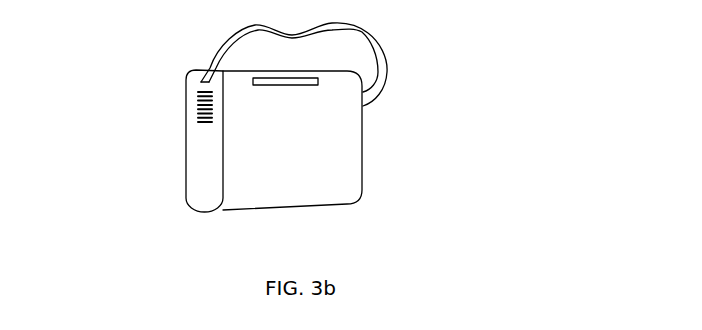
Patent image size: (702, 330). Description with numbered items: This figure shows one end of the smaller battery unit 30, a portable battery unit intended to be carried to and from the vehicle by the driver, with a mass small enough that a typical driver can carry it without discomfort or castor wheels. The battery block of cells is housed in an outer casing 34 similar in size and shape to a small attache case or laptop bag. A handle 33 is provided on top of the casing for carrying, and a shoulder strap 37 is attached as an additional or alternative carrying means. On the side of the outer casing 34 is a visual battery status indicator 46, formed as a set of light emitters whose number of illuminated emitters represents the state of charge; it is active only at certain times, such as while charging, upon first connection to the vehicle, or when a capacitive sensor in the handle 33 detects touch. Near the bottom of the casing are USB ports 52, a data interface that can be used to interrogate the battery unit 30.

The smaller battery unit 30 is at (297, 146).
The handle 33 is at (305, 84).
The outer casing 34 is at (363, 128).
The shoulder strap 37 is at (215, 55).
The visual battery status indicator 46 is at (193, 100).
The USB ports 52 is at (193, 207).